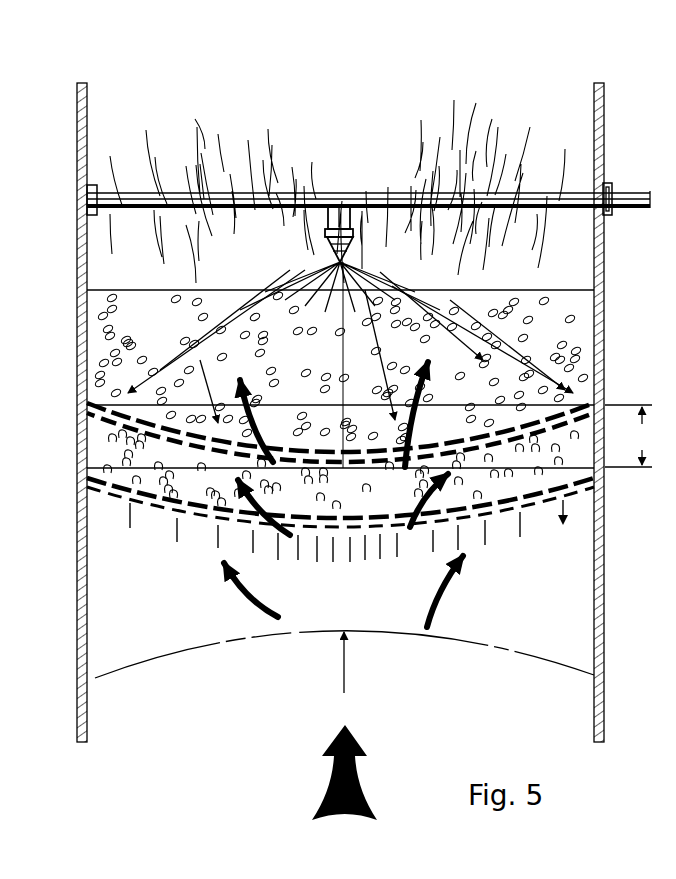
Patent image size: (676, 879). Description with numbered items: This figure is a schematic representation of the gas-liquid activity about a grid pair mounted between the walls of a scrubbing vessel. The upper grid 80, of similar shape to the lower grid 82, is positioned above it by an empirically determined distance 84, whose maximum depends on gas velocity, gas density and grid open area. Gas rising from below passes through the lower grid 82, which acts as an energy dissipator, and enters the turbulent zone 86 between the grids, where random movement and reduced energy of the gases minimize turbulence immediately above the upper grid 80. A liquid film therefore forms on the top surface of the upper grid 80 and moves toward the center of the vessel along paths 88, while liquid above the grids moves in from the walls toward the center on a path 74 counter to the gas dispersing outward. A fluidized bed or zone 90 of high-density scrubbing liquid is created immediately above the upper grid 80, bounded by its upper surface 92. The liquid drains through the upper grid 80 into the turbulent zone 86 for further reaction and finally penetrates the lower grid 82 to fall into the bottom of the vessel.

The path 74 is at (675, 231).
The upper surface 92 is at (582, 290).
The fluidized bed or zone 90 is at (517, 347).
The paths 88 is at (125, 398).
The upper grid 80 is at (118, 426).
The turbulent zone 86 is at (567, 452).
The distance 84 is at (631, 436).
The lower grid 82 is at (536, 496).